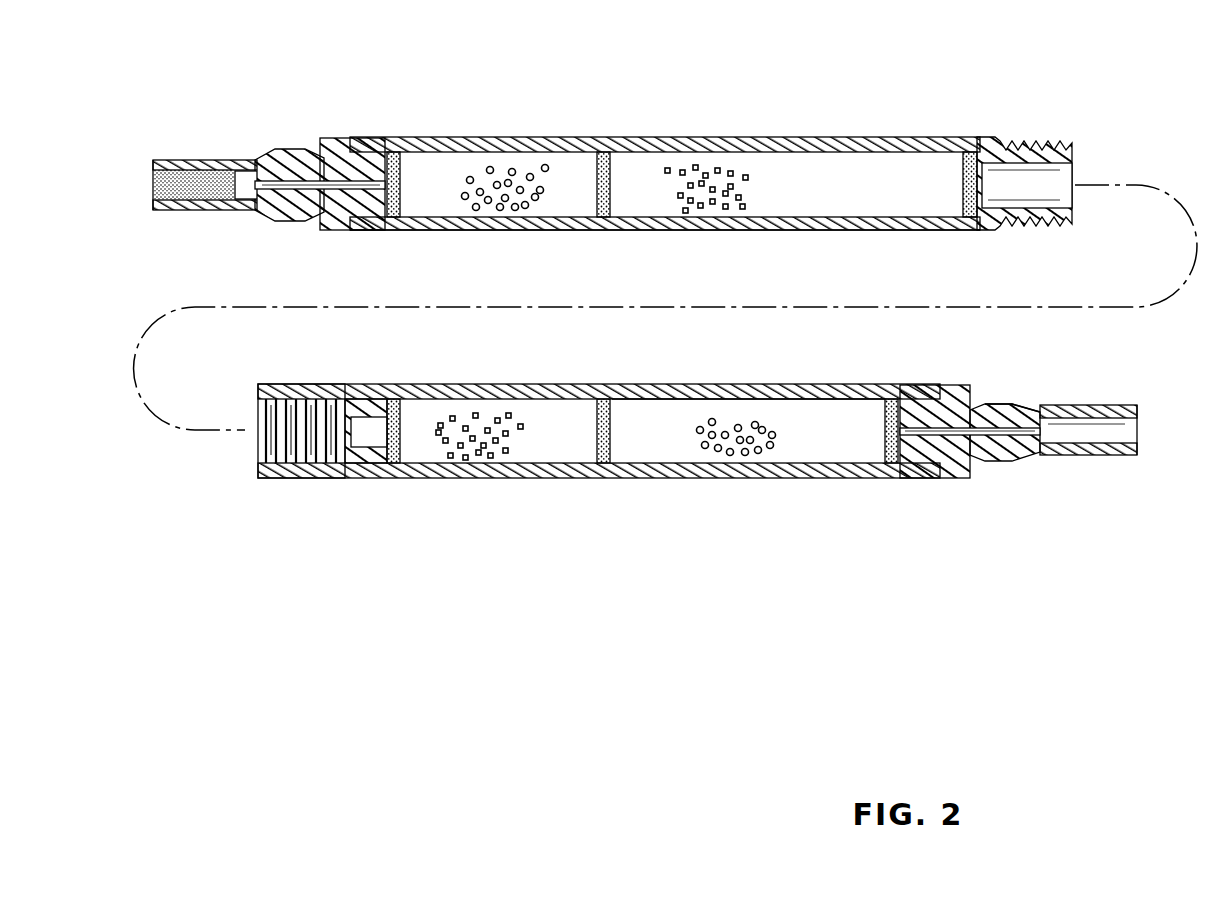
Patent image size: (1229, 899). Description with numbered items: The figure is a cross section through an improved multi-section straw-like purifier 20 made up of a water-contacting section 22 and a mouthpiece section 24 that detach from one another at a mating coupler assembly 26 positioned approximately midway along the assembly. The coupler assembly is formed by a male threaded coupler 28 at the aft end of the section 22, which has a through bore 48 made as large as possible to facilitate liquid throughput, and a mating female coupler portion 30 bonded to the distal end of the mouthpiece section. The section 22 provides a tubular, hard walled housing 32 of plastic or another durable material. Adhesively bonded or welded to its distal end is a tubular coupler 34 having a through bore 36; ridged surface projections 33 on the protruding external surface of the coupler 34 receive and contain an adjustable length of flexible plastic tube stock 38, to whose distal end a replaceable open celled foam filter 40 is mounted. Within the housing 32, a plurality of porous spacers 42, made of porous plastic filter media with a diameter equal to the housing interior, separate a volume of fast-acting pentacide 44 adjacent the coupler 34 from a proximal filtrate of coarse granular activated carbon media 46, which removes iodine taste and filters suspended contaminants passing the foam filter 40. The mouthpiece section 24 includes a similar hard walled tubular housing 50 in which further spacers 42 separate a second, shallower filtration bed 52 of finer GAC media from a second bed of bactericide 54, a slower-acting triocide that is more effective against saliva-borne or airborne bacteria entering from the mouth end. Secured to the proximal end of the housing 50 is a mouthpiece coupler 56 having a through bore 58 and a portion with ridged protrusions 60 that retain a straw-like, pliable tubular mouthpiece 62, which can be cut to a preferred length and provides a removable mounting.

The straw-like purifier 20 is at (851, 84).
The section 22 is at (551, 133).
The mouthpiece section 24 is at (684, 490).
The mating coupler assembly 26 is at (1080, 155).
The male threaded coupler 28 is at (1055, 222).
The female coupler portion 30 is at (258, 462).
The tubular hard walled housing 32 is at (566, 231).
The ridged surface projections 33 is at (278, 153).
The tubular coupler 34 is at (329, 139).
The through bore 36 is at (268, 214).
The flexible plastic tube stock 38 is at (216, 162).
The replaceable filter 40 is at (153, 170).
The porous spacers 42 is at (393, 150).
The pentacide 44 is at (478, 175).
The granular activated carbon media 46 is at (778, 172).
The through bore 48 is at (1073, 206).
The hard walled tubular housing 50 is at (727, 385).
The second filtration bed 52 is at (510, 410).
The second bed of bactericide 54 is at (790, 412).
The mouthpiece coupler 56 is at (973, 386).
The through bore 58 is at (1033, 462).
The ridged protrusions 60 is at (1022, 405).
The tubular mouthpiece 62 is at (1140, 405).